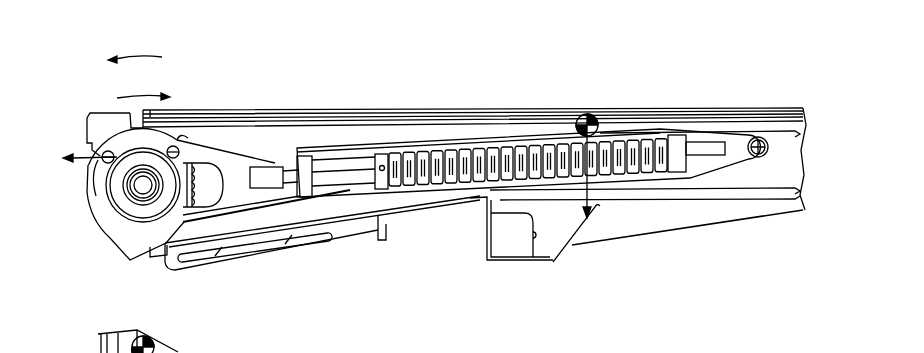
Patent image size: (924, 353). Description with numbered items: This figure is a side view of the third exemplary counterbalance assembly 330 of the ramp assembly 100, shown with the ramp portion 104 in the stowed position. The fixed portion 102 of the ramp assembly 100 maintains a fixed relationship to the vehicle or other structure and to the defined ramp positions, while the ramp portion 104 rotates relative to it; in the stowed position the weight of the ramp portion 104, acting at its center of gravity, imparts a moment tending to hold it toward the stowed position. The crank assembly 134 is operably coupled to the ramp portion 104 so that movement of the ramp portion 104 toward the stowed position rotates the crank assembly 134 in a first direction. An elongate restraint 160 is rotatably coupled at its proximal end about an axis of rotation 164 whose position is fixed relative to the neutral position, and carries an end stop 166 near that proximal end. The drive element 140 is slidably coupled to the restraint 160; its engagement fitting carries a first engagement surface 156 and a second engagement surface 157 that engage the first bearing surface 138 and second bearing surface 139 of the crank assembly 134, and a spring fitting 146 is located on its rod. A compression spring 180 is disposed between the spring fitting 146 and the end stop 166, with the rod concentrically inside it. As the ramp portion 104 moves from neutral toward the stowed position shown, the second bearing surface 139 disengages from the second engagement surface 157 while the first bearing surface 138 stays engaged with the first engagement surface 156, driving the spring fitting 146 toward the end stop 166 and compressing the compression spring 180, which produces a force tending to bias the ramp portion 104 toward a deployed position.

The ramp assembly 100 is at (605, 47).
The fixed portion 102 is at (651, 233).
The ramp portion 104 is at (437, 110).
The crank assembly 134 is at (94, 196).
The first bearing surface 138 is at (185, 148).
The second bearing surface 139 is at (108, 152).
The drive element 140 is at (270, 165).
The spring fitting 146 is at (381, 153).
The first engagement surface 156 is at (171, 148).
The second engagement surface 157 is at (158, 235).
The restraint 160 is at (717, 178).
The axis of rotation 164 is at (757, 160).
The end stop 166 is at (677, 133).
The compression spring 180 is at (507, 143).
The counterbalance assembly 330 is at (448, 214).